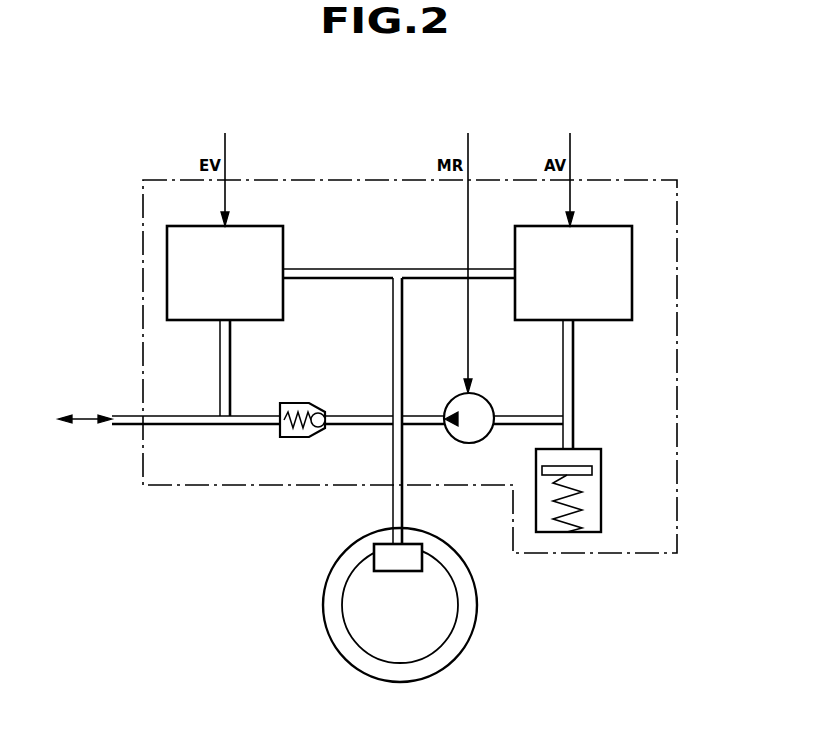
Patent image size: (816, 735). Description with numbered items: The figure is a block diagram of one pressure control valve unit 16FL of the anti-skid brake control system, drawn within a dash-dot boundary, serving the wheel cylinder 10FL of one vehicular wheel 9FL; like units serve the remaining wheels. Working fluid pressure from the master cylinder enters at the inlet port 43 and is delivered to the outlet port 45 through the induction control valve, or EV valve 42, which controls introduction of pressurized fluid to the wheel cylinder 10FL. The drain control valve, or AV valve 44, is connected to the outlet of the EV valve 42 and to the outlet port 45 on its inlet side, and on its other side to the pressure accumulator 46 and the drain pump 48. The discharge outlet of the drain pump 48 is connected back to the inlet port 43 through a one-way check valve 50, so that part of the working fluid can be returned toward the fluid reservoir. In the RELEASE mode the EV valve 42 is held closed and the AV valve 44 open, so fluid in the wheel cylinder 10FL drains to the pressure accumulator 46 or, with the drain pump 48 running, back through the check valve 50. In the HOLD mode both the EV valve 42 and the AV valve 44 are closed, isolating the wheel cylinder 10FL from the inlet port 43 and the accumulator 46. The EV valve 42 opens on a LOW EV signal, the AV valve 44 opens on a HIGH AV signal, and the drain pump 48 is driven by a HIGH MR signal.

The induction control valve (EV valve) 42 is at (284, 257).
The drain control valve (AV valve) 44 is at (598, 226).
The inlet port 43 is at (133, 419).
The outlet port 45 is at (392, 489).
The pressure accumulator 46 is at (601, 458).
The drain pump 48 is at (490, 402).
The one-way check valve 50 is at (304, 400).
The pressure control valve unit 16FL is at (171, 487).
The vehicular wheel 9FL is at (325, 626).
The wheel cylinder 10FL is at (410, 571).